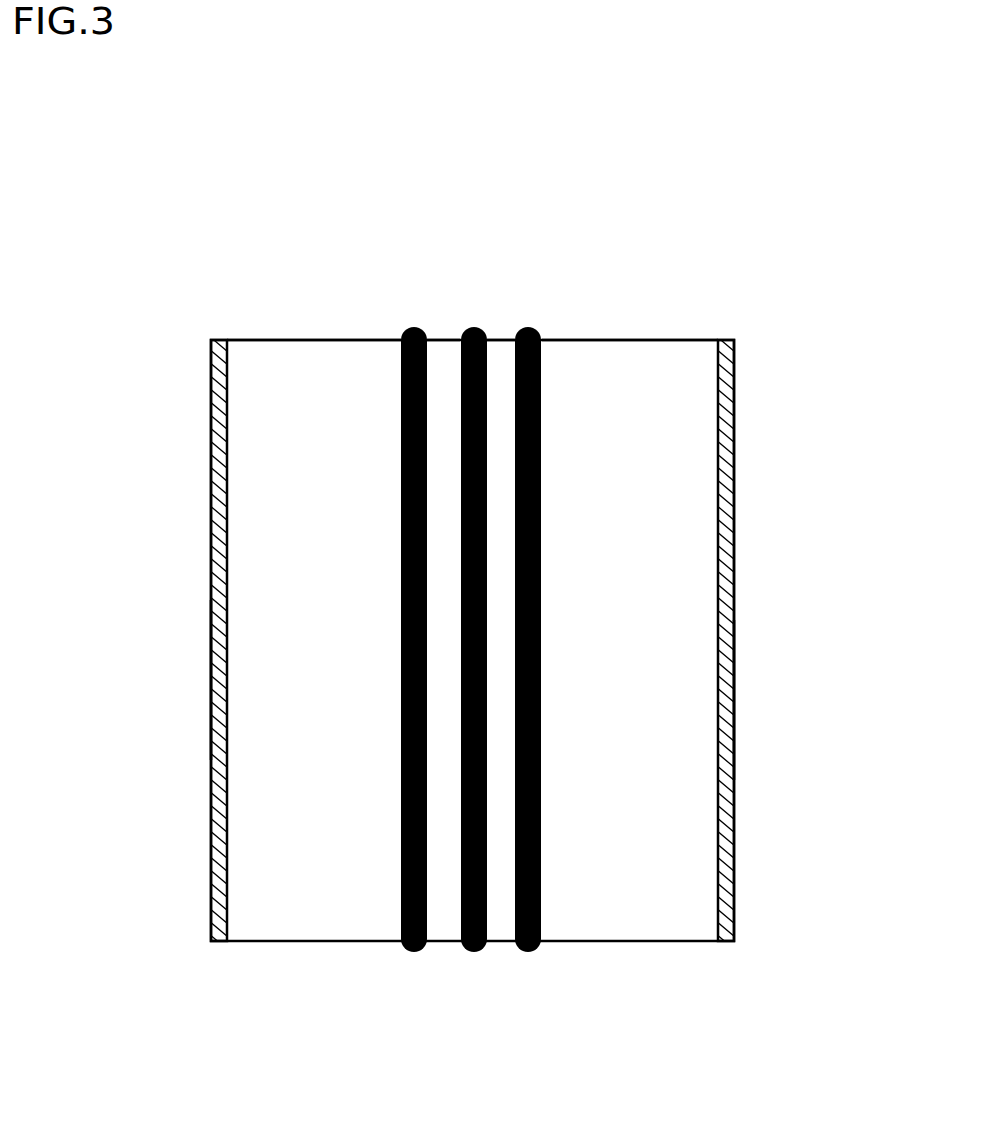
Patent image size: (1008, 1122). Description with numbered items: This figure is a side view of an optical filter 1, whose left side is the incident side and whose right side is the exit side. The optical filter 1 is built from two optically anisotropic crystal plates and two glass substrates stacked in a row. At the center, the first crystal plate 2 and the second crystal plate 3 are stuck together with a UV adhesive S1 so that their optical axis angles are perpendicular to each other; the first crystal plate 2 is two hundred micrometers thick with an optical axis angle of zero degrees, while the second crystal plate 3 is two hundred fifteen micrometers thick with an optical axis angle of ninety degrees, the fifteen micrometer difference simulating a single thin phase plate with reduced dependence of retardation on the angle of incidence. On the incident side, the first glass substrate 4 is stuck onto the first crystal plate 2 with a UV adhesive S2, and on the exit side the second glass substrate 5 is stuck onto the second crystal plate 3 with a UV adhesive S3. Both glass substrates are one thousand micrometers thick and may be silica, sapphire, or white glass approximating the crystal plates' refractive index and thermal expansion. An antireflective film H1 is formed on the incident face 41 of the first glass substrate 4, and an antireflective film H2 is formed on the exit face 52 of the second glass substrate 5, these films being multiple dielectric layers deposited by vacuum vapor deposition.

The optical filter 1 is at (752, 405).
The first crystal plate 2 is at (443, 385).
The second crystal plate 3 is at (505, 385).
The first glass substrate 4 is at (325, 380).
The second glass substrate 5 is at (633, 380).
The incident face 41 is at (212, 510).
The exit face 52 is at (722, 538).
The antireflective film H1 is at (218, 685).
The antireflective film H2 is at (726, 693).
The UV adhesive S1 is at (466, 953).
The UV adhesive S2 is at (413, 953).
The UV adhesive S3 is at (540, 903).